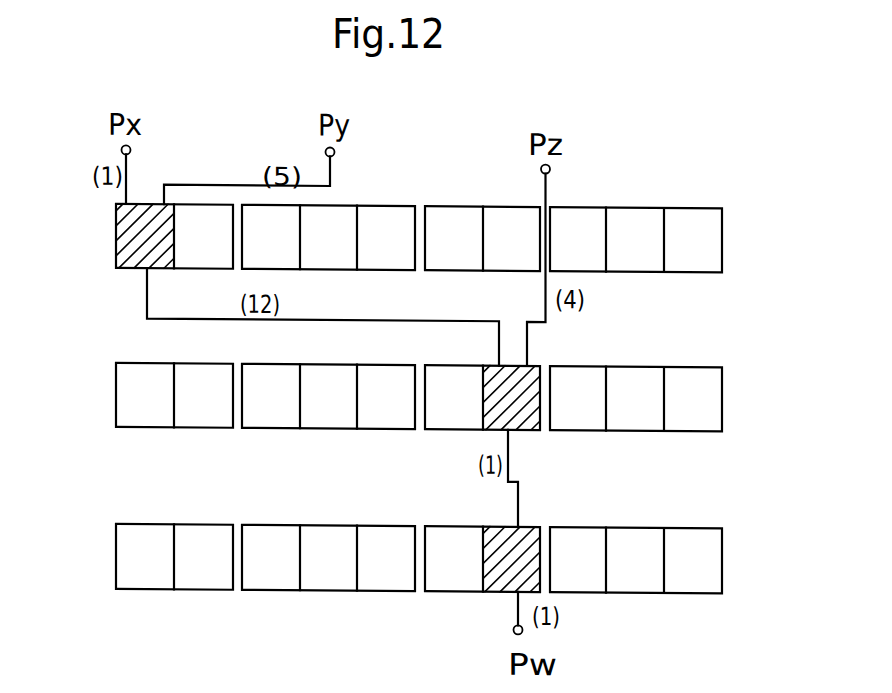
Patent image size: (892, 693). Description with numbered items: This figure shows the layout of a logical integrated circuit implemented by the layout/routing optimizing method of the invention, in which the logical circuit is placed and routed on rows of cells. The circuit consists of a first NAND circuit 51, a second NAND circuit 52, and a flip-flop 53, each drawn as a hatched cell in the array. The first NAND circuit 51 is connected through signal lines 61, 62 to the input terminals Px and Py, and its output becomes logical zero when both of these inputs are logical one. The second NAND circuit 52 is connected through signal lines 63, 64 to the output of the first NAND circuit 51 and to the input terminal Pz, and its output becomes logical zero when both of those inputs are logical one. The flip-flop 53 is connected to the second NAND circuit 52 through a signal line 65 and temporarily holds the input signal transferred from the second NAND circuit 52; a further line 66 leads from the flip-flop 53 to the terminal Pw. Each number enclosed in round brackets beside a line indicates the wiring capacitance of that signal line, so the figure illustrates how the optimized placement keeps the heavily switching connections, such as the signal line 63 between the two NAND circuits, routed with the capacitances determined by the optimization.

The first NAND circuit 51 is at (117, 247).
The second NAND circuit 52 is at (482, 405).
The flip-flop 53 is at (550, 554).
The signal line 61 is at (128, 169).
The signal line 62 is at (330, 160).
The signal line 63 is at (362, 317).
The signal line 64 is at (527, 333).
The signal line 65 is at (518, 496).
The wiring from cell 53 to terminal Pw 66 is at (515, 598).